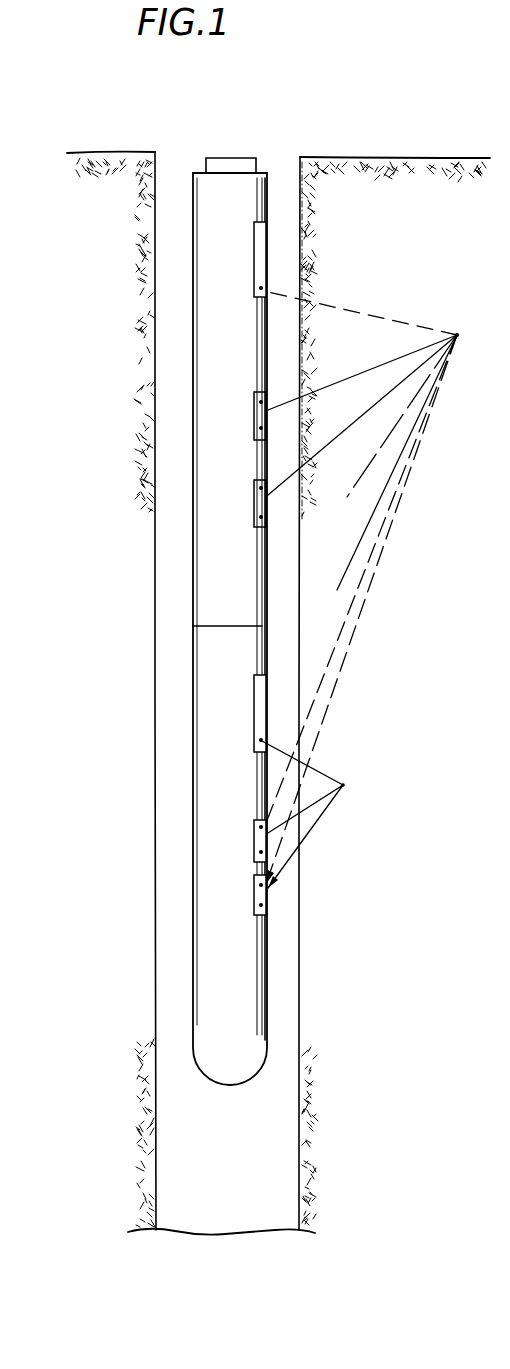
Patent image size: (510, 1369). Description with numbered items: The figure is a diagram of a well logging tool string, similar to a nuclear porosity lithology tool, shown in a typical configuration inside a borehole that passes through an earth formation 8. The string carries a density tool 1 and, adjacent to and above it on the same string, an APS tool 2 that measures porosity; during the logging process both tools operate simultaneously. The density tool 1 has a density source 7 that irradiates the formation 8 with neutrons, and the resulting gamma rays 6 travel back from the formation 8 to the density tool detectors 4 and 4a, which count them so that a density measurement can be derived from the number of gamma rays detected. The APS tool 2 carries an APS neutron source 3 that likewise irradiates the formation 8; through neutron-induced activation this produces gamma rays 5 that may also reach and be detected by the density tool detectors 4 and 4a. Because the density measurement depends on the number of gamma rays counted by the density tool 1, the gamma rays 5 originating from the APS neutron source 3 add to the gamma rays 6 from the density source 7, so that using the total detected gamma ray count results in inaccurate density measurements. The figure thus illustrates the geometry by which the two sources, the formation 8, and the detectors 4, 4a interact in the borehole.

The density tool 1 is at (268, 656).
The APS tool 2 is at (268, 572).
The APS neutron source 3 is at (268, 248).
The density tool detector 4 is at (268, 847).
The density tool detector 4a is at (268, 900).
The gamma rays 5 is at (355, 611).
The gamma rays 6 is at (316, 804).
The density source 7 is at (268, 710).
The formation 8 is at (112, 152).